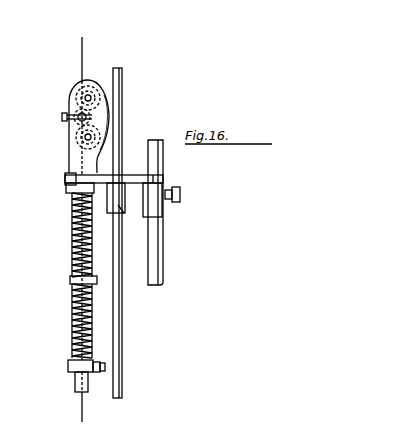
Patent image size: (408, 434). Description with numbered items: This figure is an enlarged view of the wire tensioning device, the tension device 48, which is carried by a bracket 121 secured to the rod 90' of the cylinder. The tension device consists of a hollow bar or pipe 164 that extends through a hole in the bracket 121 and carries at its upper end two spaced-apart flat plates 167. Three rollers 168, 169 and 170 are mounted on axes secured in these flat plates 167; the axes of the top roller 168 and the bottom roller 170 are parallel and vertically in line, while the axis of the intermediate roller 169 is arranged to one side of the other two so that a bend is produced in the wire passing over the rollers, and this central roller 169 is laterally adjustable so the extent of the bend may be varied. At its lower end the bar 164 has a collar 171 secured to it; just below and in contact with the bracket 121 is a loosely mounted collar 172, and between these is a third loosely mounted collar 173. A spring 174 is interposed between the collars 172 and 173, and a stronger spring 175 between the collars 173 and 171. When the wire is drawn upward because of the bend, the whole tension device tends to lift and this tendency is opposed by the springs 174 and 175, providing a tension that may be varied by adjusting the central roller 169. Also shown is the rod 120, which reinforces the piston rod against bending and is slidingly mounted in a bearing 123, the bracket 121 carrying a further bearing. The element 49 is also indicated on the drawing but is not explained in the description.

The top roller 168 is at (91, 80).
The tension device 48 is at (70, 152).
The intermediate roller 169 is at (78, 110).
The bottom roller 170 is at (78, 137).
The flat plates 167 is at (66, 126).
The rod 120 is at (120, 90).
The rod of the cylinder 90' is at (178, 212).
The bracket 121 is at (66, 180).
The bearing 123 is at (118, 204).
The loosely mounted collar 172 is at (68, 189).
The spring 174 is at (72, 230).
The third collar 173 is at (72, 278).
The spring rod 49 is at (73, 294).
The stronger spring 175 is at (72, 323).
The collar 171 is at (70, 364).
The hollow bar or pipe 164 is at (75, 378).